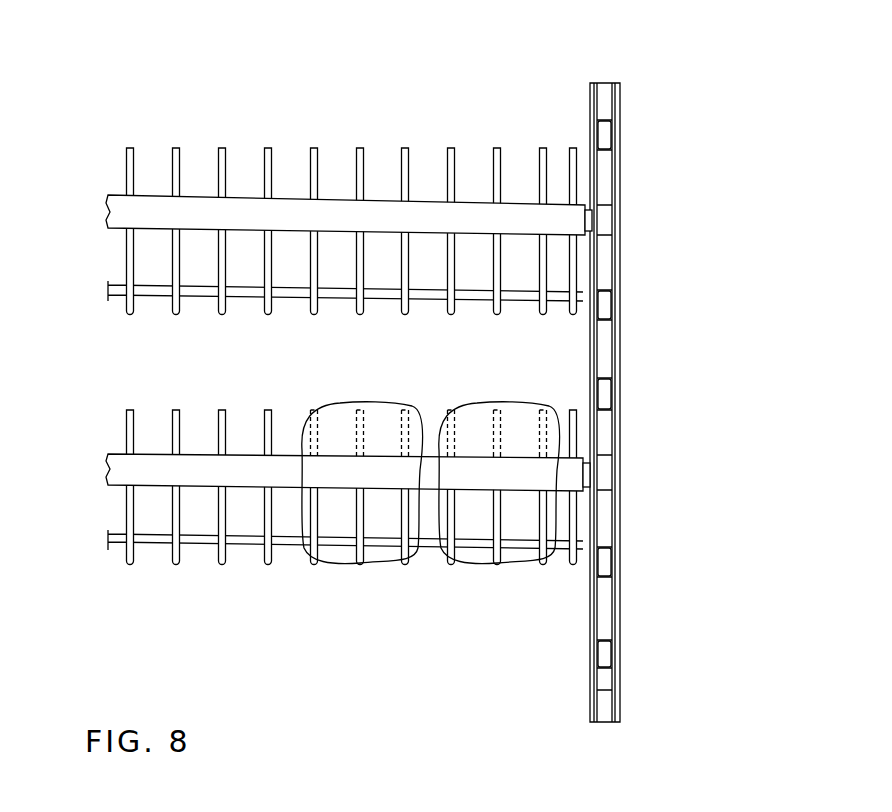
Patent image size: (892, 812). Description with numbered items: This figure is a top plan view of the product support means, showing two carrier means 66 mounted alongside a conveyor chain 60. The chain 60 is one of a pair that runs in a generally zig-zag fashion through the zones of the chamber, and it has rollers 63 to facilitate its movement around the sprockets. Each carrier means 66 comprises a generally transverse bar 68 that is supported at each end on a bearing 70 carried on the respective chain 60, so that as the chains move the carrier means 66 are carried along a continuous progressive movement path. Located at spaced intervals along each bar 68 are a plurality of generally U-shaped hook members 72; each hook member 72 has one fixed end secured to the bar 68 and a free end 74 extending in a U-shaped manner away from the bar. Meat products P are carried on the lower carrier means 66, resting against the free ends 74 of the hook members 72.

The conveyor chain 60 is at (620, 93).
The roller 63 is at (614, 192).
The carrier means 66 is at (318, 126).
The transverse bar 68 is at (243, 205).
The bearing 70 is at (590, 212).
The hook member 72 is at (358, 320).
The free end 74 is at (405, 150).
The product P is at (472, 428).